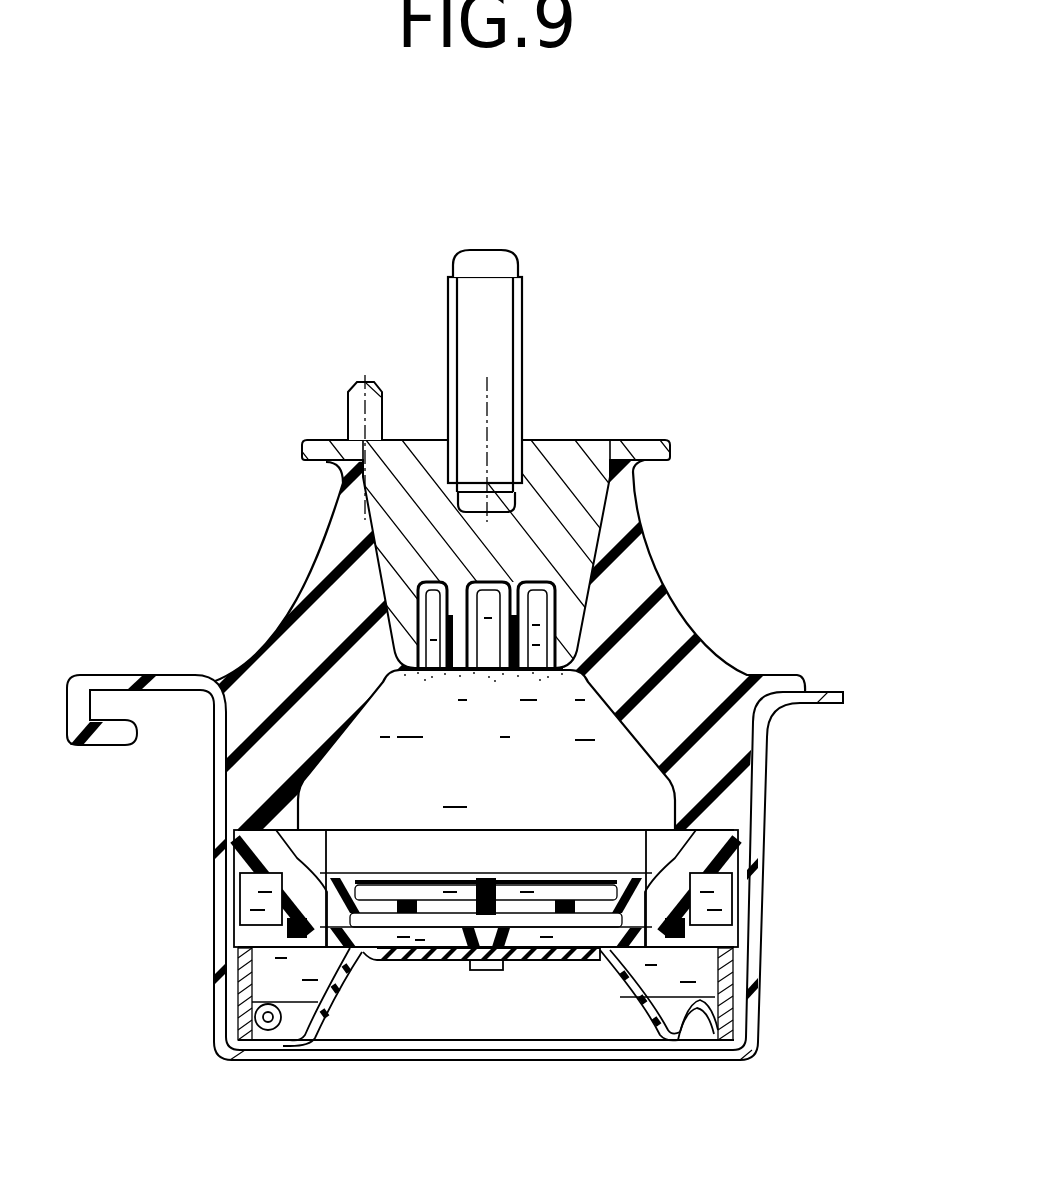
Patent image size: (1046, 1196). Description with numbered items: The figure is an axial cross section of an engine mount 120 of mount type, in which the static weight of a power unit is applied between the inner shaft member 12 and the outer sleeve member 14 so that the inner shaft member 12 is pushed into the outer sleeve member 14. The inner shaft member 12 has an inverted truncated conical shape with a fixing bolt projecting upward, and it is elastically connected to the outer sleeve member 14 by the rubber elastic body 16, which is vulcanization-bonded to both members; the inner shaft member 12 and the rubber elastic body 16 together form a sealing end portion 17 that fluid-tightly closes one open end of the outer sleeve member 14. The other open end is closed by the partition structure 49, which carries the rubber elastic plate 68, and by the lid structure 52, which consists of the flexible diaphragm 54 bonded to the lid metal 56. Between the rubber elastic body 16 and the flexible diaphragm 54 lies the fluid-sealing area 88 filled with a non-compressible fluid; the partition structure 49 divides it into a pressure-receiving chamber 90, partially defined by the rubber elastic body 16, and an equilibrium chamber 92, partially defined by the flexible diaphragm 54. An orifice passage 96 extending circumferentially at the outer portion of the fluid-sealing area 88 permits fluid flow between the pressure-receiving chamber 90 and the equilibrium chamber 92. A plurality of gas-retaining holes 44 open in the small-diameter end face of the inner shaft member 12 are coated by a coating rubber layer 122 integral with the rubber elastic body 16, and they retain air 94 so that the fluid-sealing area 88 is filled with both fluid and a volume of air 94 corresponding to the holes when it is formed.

The engine mount 120 is at (523, 562).
The inner shaft member 12 is at (545, 460).
The outer sleeve member 14 is at (762, 767).
The rubber elastic body 16 is at (328, 640).
The sealing end portion 17 is at (588, 698).
The gas-retaining holes 44 is at (417, 593).
The coating rubber layer 122 is at (488, 580).
The fluid-sealing area 88 is at (446, 777).
The pressure-receiving chamber 90 is at (556, 682).
The air 94 is at (380, 690).
The partition structure 49 is at (489, 852).
The rubber elastic plate 68 is at (561, 903).
The orifice passage 96 is at (243, 895).
The equilibrium chamber 92 is at (287, 983).
The lid metal 56 is at (727, 983).
The lid structure 52 is at (337, 1024).
The flexible diaphragm 54 is at (640, 997).